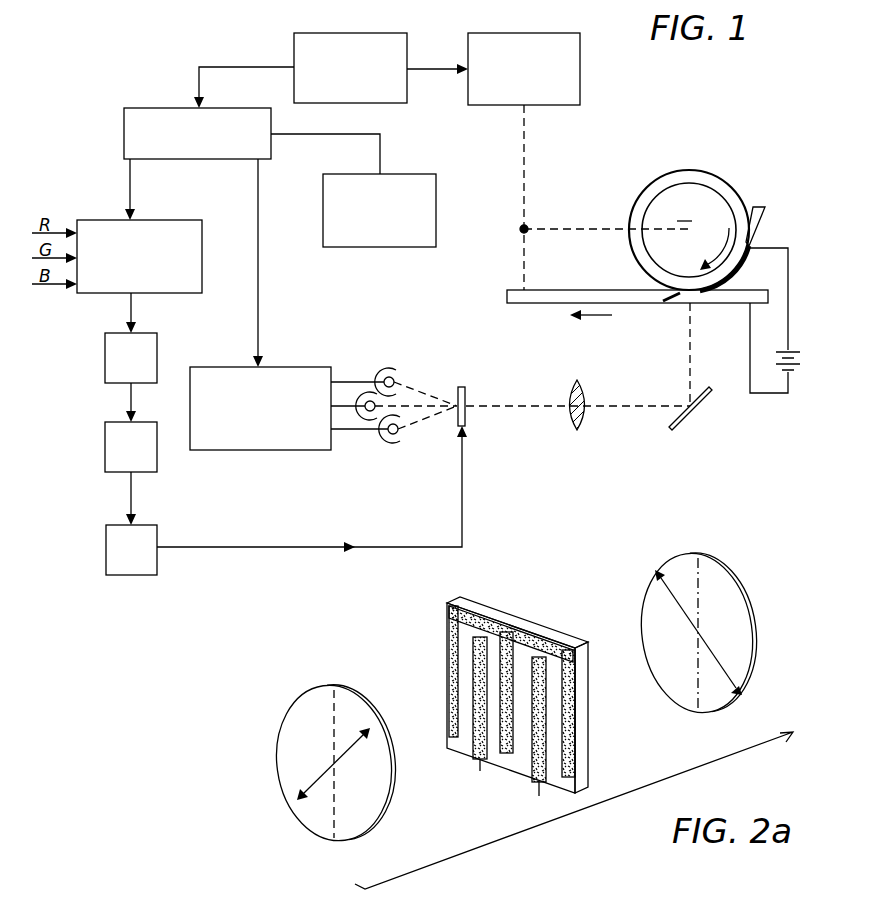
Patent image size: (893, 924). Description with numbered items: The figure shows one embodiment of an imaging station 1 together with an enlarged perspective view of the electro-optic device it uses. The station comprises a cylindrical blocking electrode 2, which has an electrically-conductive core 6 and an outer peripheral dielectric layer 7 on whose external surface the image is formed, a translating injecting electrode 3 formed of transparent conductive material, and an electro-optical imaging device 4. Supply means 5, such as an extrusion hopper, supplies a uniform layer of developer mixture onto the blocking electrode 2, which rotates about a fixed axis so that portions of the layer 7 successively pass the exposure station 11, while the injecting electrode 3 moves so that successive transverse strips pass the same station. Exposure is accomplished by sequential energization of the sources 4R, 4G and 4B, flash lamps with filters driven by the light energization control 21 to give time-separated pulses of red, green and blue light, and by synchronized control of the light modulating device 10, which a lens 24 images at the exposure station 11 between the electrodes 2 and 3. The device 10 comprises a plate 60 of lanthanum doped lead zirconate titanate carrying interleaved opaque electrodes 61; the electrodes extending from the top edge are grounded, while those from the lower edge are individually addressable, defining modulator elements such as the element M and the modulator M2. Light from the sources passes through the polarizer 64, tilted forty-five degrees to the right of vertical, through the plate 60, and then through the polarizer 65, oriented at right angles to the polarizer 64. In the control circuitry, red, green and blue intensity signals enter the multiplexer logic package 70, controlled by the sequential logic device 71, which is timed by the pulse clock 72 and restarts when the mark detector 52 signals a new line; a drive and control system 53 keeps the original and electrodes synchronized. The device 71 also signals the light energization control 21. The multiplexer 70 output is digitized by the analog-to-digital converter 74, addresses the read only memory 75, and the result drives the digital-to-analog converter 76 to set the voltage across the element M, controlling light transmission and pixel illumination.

In FIG. 1, the imaging station 1 is at (786, 131).
In FIG. 1, the cylindrical blocking electrode 2 is at (689, 205).
In FIG. 1, the translating injecting electrode 3 is at (540, 291).
In FIG. 1, the electro-optical imaging device 4 is at (404, 388).
In FIG. 1, the blue light source 4B is at (394, 382).
In FIG. 1, the green light source 4G is at (377, 406).
In FIG. 1, the red light source 4R is at (398, 430).
In FIG. 1, the supply means 5 is at (763, 220).
In FIG. 1, the electrically-conductive core 6 is at (680, 190).
In FIG. 1, the outer peripheral dielectric layer 7 is at (714, 185).
In FIG. 1, the light modulating device 10 is at (468, 393).
In FIG. 2A, the light modulating device 10 is at (606, 801).
In FIG. 1, the exposure station 11 is at (664, 303).
In FIG. 1, the light energization control 21 is at (290, 365).
In FIG. 1, the lens 24 is at (582, 391).
In FIG. 1, the mark detector 52 is at (339, 35).
In FIG. 1, the drive and control system 53 is at (536, 32).
In FIG. 2A, the plate 60 is at (513, 698).
In FIG. 2A, the electrodes 61 is at (447, 652).
In FIG. 2A, the polarizer 64 is at (374, 808).
In FIG. 2A, the polarizer 65 is at (746, 675).
In FIG. 1, the multiplexer logic package 70 is at (151, 221).
In FIG. 1, the sequential logic device 71 is at (224, 109).
In FIG. 1, the pulse clock 72 is at (414, 175).
In FIG. 1, the analog-to-digital converter 74 is at (154, 335).
In FIG. 1, the read only memory 75 is at (154, 422).
In FIG. 1, the digital-to-analog converter 76 is at (154, 529).
In FIG. 2A, the modulator element M is at (497, 623).
In FIG. 2A, the electro-optic modulator M2 is at (555, 637).